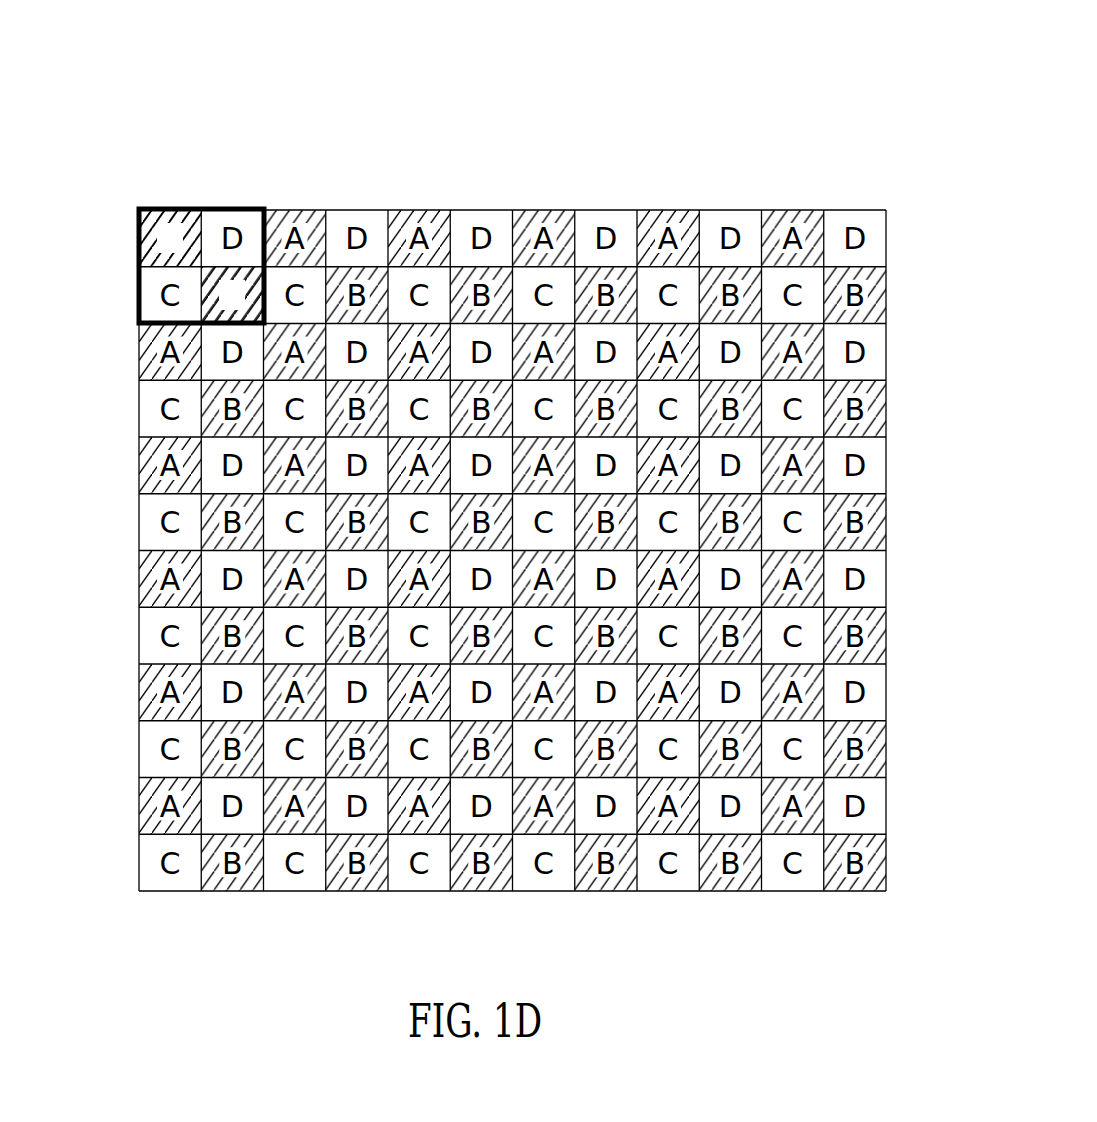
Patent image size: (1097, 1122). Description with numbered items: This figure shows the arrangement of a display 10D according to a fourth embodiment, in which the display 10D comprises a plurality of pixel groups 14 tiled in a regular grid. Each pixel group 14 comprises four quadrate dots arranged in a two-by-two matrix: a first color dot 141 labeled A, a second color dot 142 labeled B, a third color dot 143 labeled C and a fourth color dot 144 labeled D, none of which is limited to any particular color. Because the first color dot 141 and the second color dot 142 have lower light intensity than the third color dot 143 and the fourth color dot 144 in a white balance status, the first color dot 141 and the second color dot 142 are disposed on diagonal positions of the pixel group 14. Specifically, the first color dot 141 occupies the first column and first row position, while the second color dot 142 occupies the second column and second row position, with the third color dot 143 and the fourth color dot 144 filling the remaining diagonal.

The display 10D is at (884, 198).
The pixel group 14 is at (237, 199).
The first color dot 141 is at (182, 207).
The second color dot 142 is at (243, 318).
The third color dot 143 is at (148, 278).
The fourth color dot 144 is at (222, 215).